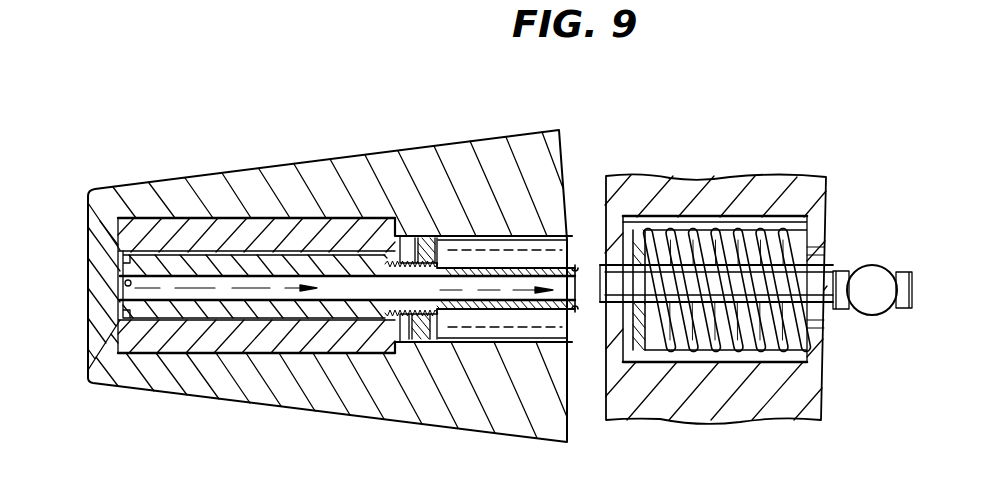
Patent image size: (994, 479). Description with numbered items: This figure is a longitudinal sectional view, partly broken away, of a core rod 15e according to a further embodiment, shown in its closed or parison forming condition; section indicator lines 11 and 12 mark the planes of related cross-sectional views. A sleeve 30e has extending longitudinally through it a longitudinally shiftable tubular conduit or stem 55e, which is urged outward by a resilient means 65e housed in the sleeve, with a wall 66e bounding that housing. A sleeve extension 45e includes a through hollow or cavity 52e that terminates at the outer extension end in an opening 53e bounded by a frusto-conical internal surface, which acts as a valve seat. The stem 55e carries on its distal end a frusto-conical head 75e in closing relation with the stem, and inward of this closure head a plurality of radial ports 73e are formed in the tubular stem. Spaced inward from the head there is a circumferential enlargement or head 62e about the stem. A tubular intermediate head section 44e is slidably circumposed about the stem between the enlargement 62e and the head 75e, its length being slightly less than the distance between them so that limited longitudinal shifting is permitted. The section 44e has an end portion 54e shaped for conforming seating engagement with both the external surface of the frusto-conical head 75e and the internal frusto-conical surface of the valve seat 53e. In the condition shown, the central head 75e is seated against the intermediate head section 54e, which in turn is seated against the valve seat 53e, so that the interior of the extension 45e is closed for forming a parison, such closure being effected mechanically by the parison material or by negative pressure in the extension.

The core rod 15e is at (545, 440).
The sleeve extension 45e is at (343, 158).
The opening (valve seat) 53e is at (100, 211).
The end portion (head section) 54e is at (96, 362).
The frusto-conical head 75e is at (97, 280).
The radial ports 73e is at (117, 305).
The tubular intermediate head section 44e is at (282, 346).
The through hollow or cavity 52e is at (538, 233).
The circumferential enlargement or head 62e is at (435, 325).
The sleeve 30e is at (750, 176).
The spring housing wall 66e is at (637, 215).
The resilient means 65e is at (800, 341).
The tubular conduit or stem 55e is at (829, 263).
The section line 11 is at (130, 432).
The section line 12 is at (416, 455).